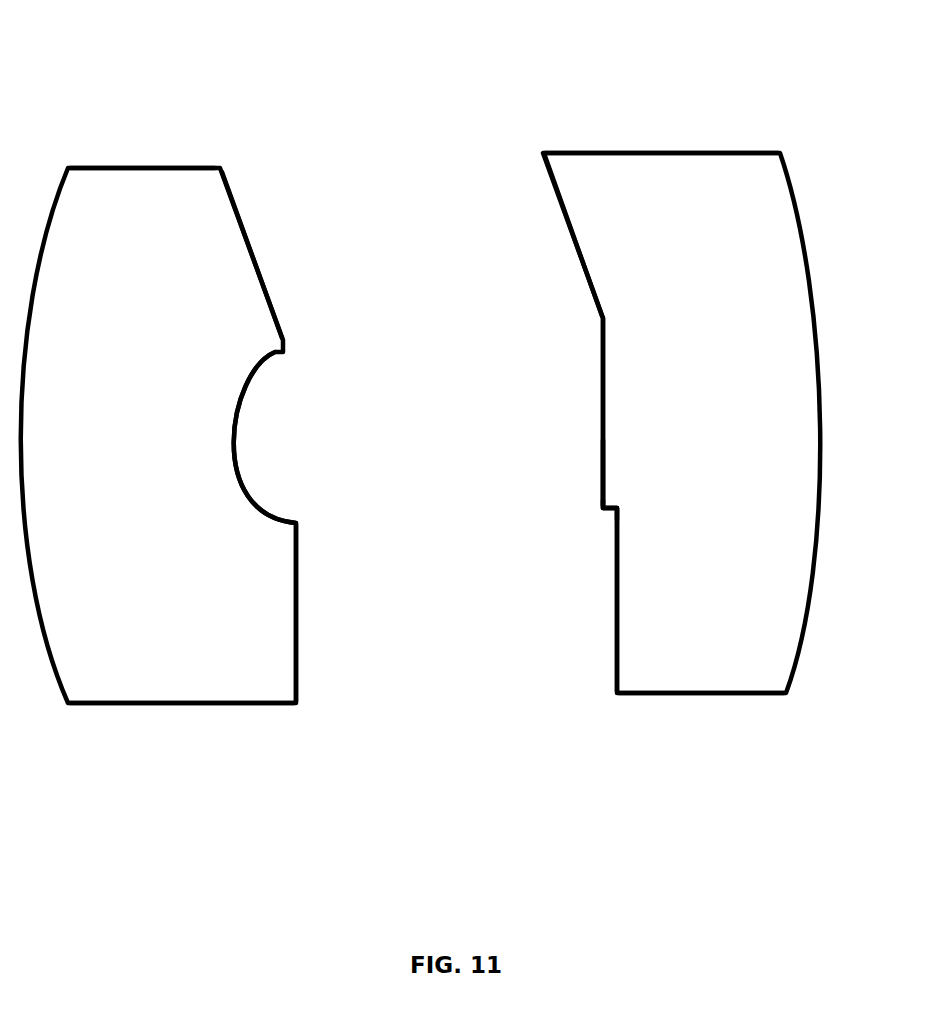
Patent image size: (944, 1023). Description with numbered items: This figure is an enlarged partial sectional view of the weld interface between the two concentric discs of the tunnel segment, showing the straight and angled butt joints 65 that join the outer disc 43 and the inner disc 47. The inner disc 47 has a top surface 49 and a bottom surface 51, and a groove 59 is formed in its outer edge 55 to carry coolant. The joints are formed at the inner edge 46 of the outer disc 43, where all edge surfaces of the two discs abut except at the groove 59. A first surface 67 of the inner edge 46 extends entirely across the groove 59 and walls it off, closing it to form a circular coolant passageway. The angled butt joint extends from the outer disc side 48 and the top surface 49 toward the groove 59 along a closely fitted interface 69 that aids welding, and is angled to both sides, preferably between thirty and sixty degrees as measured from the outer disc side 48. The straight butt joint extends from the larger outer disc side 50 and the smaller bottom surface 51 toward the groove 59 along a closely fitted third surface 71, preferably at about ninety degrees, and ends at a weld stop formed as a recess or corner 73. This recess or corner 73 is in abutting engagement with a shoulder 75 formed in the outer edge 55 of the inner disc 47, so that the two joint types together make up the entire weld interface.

The outer disc 43 is at (708, 192).
The inner edge 46 is at (621, 466).
The inner disc 47 is at (99, 222).
The outer disc side 48 is at (623, 134).
The top surface 49 is at (96, 150).
The outer disc side 50 is at (705, 716).
The bottom surface 51 is at (148, 728).
The outer edge 55 is at (240, 270).
The groove 59 is at (244, 463).
The straight and angled butt joints 65 is at (478, 544).
The first surface 67 is at (591, 387).
The closely fitted interface 69 is at (553, 235).
The third surface 71 is at (603, 602).
The weld stop 73 is at (600, 524).
The shoulder 75 is at (286, 546).